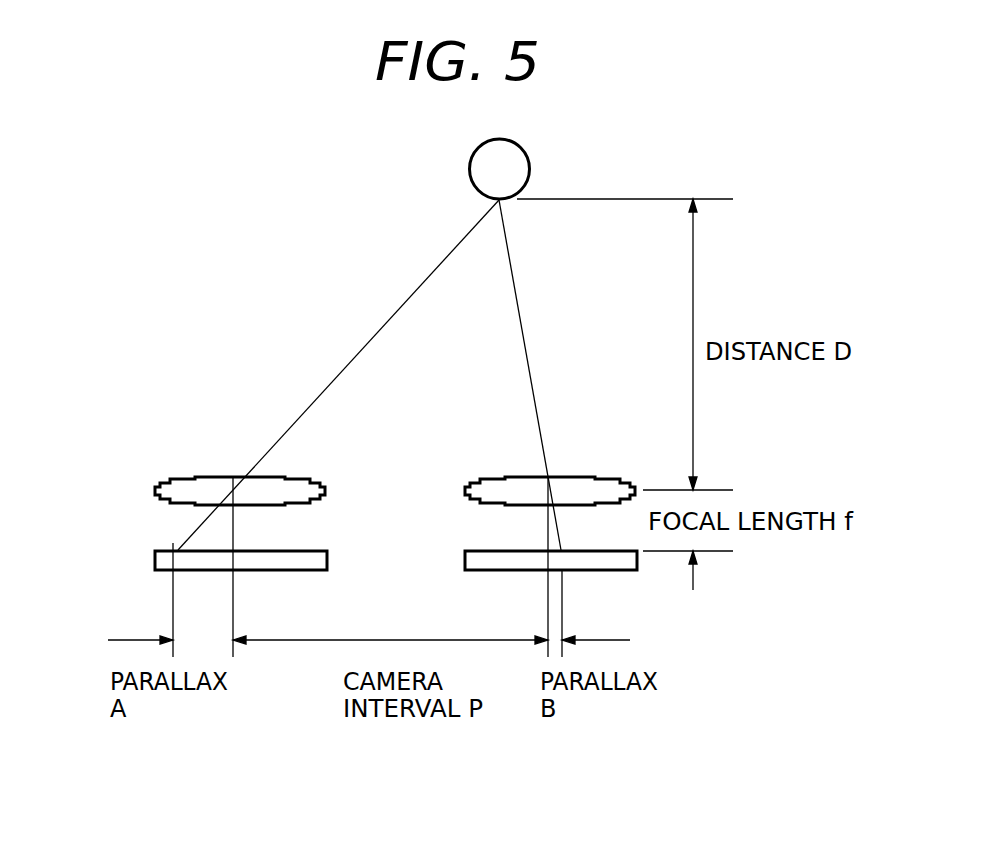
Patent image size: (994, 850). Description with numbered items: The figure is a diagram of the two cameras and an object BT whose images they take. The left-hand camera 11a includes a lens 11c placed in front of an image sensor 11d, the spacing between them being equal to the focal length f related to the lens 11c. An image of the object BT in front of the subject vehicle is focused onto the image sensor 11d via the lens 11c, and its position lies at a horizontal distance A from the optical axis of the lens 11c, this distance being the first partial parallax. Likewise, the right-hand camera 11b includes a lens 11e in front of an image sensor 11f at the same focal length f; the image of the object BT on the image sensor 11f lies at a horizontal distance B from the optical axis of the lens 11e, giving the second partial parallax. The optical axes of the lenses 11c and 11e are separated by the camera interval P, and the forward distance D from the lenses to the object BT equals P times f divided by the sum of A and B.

The object BT is at (530, 160).
The left-hand camera 11a is at (211, 502).
The right-hand camera 11b is at (510, 526).
The lens 11c is at (293, 487).
The image sensor 11d is at (310, 554).
The lens 11e is at (582, 487).
The image sensor 11f is at (583, 563).